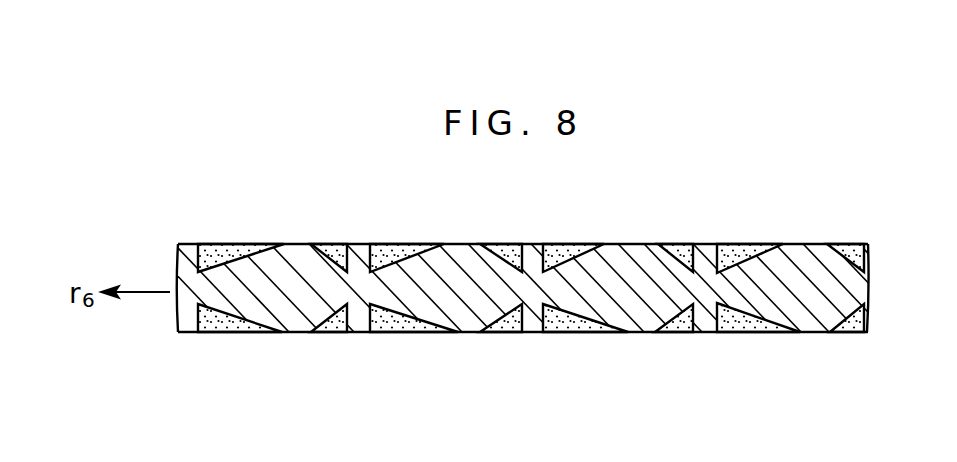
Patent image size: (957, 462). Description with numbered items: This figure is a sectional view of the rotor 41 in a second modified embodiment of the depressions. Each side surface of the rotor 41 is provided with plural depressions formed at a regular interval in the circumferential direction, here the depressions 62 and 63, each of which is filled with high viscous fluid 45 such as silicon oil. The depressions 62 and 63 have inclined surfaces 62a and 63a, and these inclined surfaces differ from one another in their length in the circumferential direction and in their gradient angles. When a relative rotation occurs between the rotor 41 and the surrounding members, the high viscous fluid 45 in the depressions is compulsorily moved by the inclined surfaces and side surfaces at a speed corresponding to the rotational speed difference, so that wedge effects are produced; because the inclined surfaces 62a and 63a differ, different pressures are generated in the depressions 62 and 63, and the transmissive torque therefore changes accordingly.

The rotor 41 is at (812, 302).
The high viscous fluid 45 is at (398, 322).
The depression 62 is at (570, 333).
The depression 63 is at (677, 333).
The inclined surface 62a is at (601, 246).
The inclined surface 63a is at (670, 246).